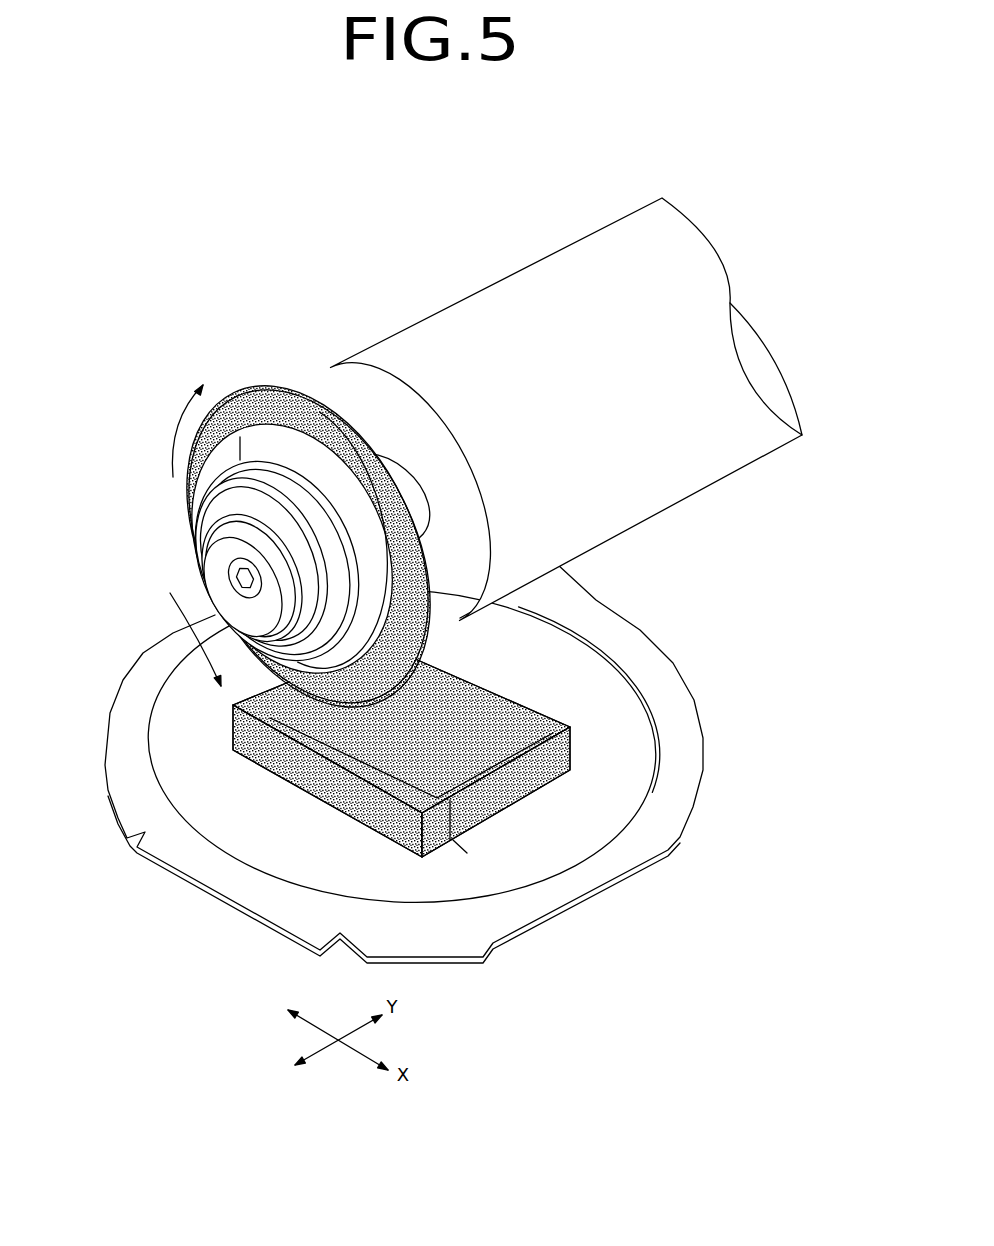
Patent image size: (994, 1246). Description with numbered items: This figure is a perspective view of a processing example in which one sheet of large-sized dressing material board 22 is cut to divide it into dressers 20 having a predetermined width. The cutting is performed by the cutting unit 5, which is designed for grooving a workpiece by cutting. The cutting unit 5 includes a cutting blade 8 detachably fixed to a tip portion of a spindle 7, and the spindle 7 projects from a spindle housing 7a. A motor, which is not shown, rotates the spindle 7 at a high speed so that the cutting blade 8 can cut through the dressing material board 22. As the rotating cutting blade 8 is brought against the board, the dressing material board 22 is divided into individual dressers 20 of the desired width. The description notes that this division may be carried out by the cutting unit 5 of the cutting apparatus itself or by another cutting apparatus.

The cutting unit 5 is at (434, 515).
The spindle 7 is at (558, 409).
The spindle housing 7a is at (403, 462).
The cutting blade 8 is at (308, 521).
The dresser 20 is at (227, 728).
The dressing material board 22 is at (184, 624).